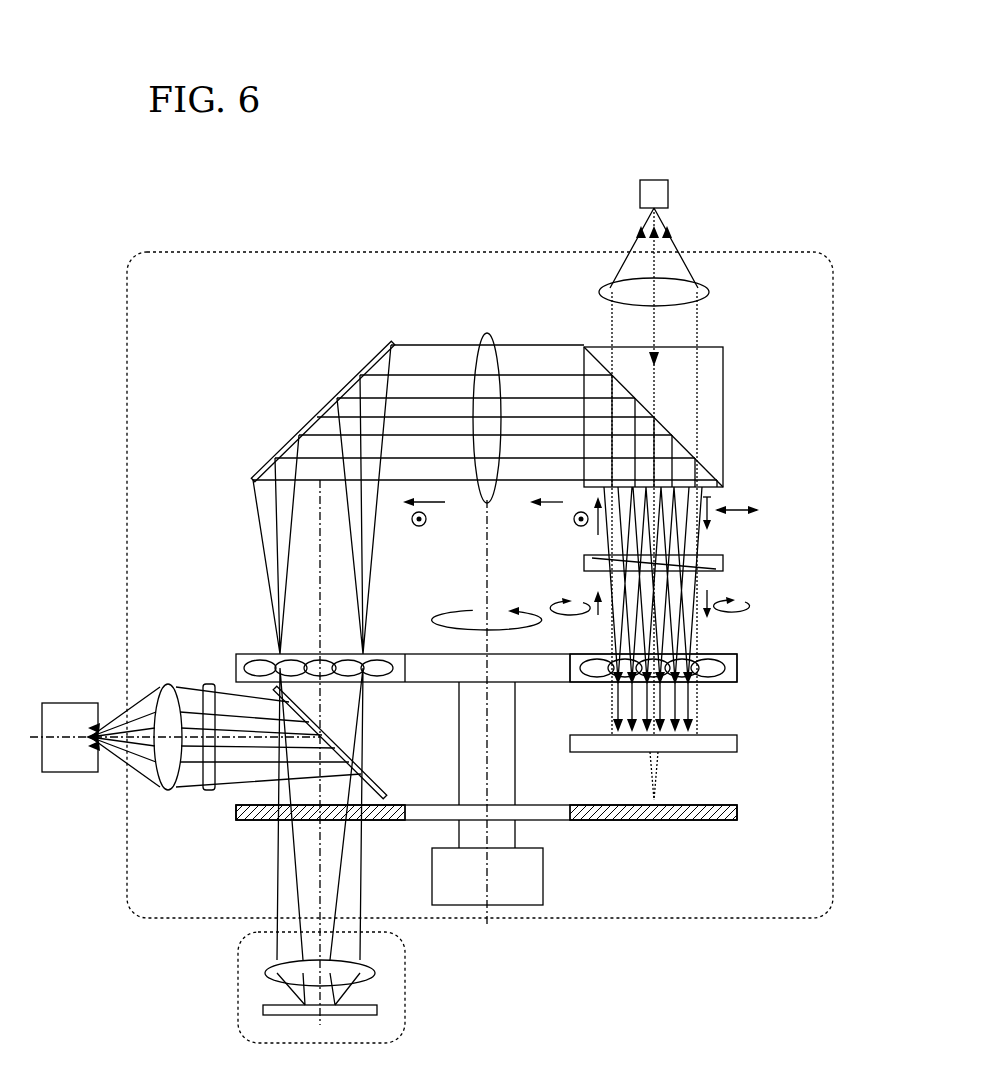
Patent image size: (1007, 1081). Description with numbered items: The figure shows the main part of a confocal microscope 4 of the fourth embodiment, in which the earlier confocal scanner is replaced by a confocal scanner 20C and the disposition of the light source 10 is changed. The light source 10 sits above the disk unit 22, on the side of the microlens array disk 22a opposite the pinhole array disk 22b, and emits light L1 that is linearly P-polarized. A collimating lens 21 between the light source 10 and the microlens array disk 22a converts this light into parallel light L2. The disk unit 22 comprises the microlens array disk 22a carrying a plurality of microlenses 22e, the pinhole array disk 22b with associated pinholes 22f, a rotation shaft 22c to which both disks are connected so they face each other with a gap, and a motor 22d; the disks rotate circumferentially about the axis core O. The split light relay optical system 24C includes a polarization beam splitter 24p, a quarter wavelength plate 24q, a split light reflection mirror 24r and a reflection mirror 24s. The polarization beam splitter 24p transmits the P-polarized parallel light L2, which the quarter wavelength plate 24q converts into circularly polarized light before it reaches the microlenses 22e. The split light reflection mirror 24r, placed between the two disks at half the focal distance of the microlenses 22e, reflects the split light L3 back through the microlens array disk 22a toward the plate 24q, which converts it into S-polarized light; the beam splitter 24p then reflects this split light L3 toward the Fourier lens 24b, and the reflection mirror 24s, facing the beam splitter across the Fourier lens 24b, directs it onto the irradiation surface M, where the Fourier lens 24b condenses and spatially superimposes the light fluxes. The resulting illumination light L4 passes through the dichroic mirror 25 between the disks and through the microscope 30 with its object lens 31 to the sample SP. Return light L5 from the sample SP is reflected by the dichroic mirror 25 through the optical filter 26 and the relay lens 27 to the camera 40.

The confocal microscope 4 is at (808, 222).
The light source 10 is at (640, 192).
The confocal scanner 20C is at (213, 252).
The collimating lens 21 is at (708, 283).
The disk unit 22 is at (418, 642).
The microlens array disk 22a is at (738, 666).
The pinhole array disk 22b is at (738, 816).
The rotation shaft 22c is at (517, 831).
The motor 22d is at (544, 891).
The microlenses 22e is at (350, 650).
The pinholes 22f is at (356, 821).
The split light relay optical system 24C is at (716, 335).
The Fourier lens 24b is at (490, 333).
The polarization beam splitter 24p is at (724, 381).
The 1/4 wavelength plate 24q is at (725, 561).
The split light reflection mirror 24r is at (738, 746).
The reflection mirror 24s is at (338, 393).
The dichroic mirror 25 is at (388, 791).
The optical filter 26 is at (208, 683).
The relay lens 27 is at (168, 683).
The microscope 30 is at (238, 986).
The object lens 31 is at (372, 976).
The camera 40 is at (72, 703).
The irradiation surface M is at (275, 616).
The axis core O is at (490, 599).
The sample SP is at (378, 1011).
The light L1 is at (632, 263).
The parallel light L2 is at (640, 340).
The split light L3 is at (440, 505).
The illumination light L4 is at (350, 913).
The return light L5 is at (225, 791).